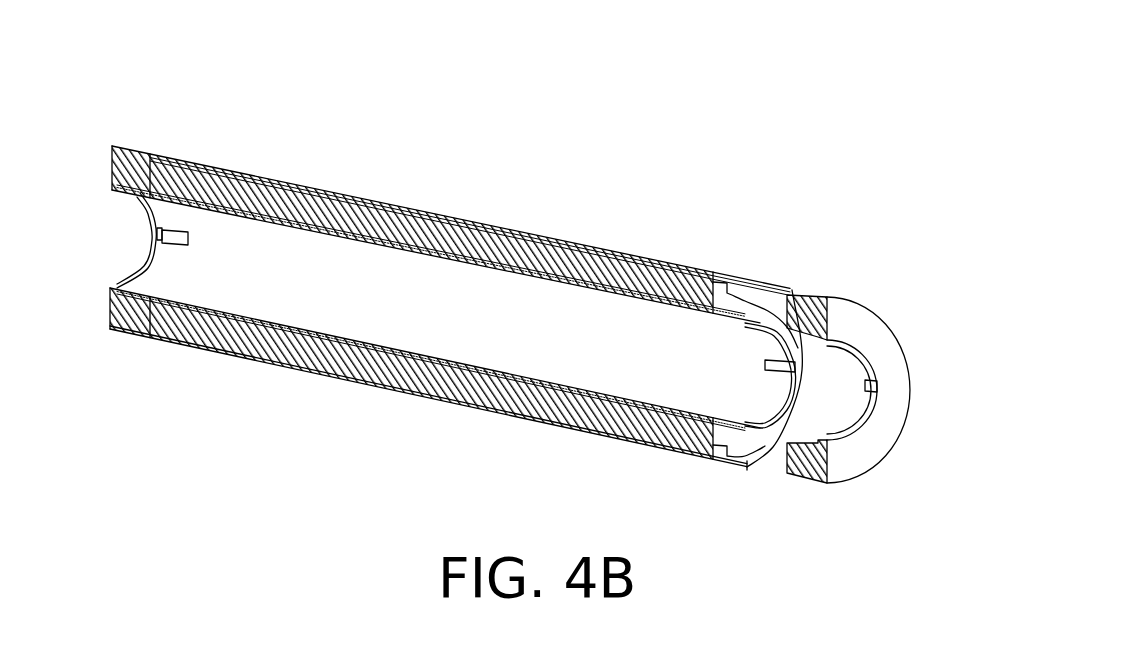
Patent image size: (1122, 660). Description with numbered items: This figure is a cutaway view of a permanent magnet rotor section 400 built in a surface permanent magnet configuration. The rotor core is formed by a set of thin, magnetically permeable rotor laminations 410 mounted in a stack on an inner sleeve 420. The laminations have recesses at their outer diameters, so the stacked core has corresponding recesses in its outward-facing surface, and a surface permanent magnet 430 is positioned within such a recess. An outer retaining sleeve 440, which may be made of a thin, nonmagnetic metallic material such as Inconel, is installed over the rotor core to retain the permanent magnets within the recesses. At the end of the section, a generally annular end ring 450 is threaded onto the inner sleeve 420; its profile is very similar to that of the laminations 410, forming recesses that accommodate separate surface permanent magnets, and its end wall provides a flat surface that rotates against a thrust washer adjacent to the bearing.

The rotor section 400 is at (522, 210).
The rotor laminations 410 is at (537, 258).
The inner sleeve 420 is at (387, 246).
The surface permanent magnet 430 is at (758, 297).
The outer retaining sleeve 440 is at (300, 183).
The end ring 450 is at (852, 330).